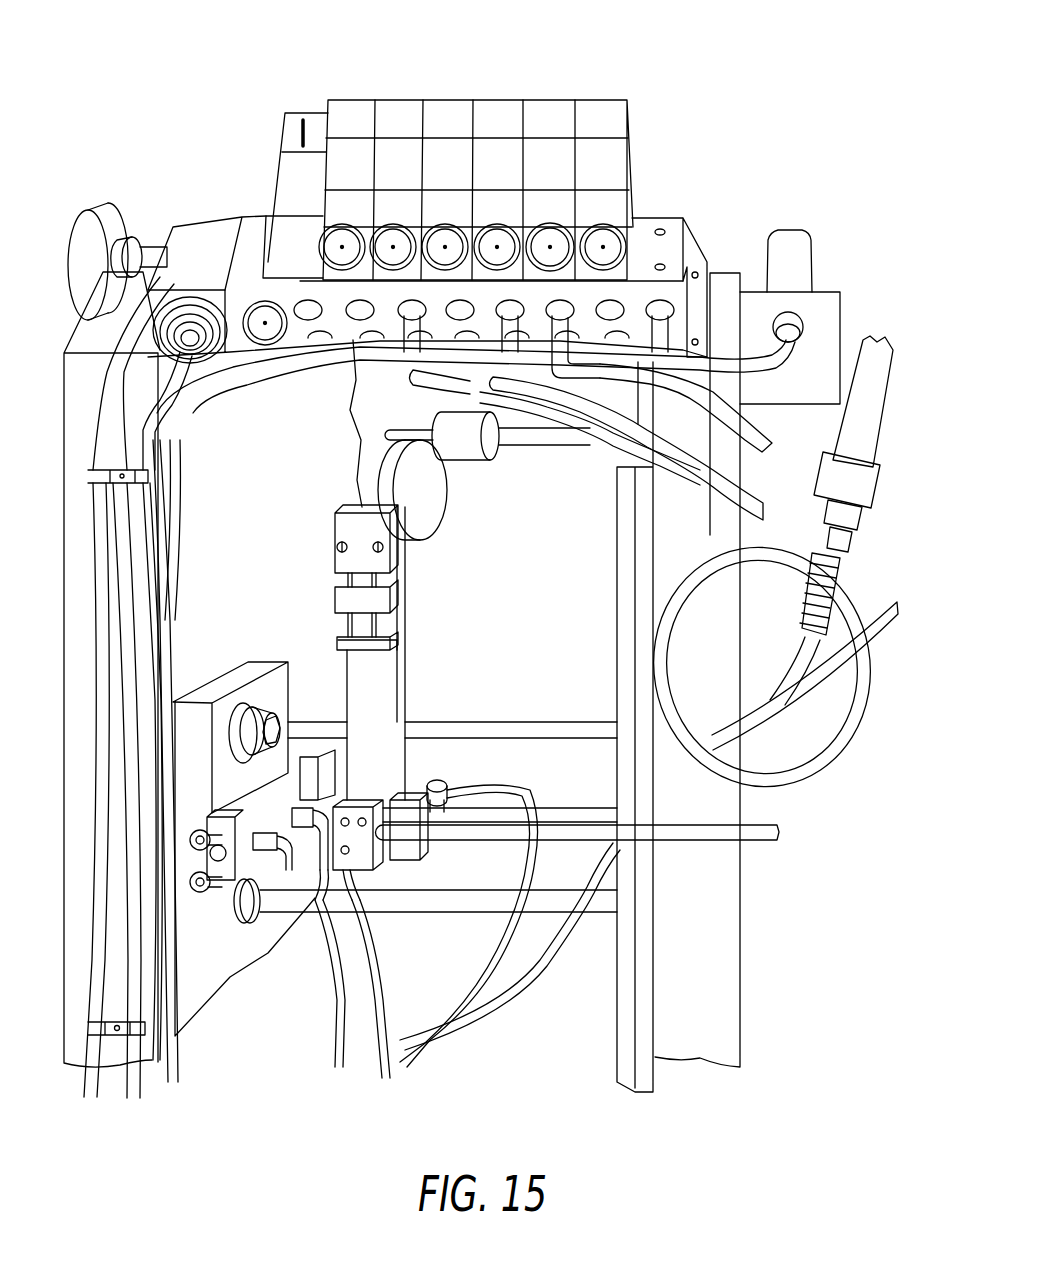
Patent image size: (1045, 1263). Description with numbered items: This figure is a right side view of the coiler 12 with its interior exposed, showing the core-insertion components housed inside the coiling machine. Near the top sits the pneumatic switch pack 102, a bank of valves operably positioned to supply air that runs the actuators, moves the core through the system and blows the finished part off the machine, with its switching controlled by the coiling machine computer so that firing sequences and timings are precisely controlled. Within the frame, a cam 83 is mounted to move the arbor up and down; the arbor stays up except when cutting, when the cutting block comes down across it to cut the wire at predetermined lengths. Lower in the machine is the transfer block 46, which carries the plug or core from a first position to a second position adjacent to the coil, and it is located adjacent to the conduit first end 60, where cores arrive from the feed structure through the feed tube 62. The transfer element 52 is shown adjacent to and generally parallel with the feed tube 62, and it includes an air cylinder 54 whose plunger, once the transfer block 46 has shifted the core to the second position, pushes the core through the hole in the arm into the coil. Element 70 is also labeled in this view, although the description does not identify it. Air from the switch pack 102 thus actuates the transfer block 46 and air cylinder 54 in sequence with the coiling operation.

The coiler 12 is at (660, 76).
The pneumatic switch pack 102 is at (632, 166).
The cam 83 is at (430, 494).
The transfer block 46 is at (313, 758).
The first end 60 is at (360, 812).
The air cylinder 54 is at (578, 815).
The transfer element 52 is at (533, 782).
The feed tube 62 is at (466, 836).
The fitting block 70 is at (243, 862).